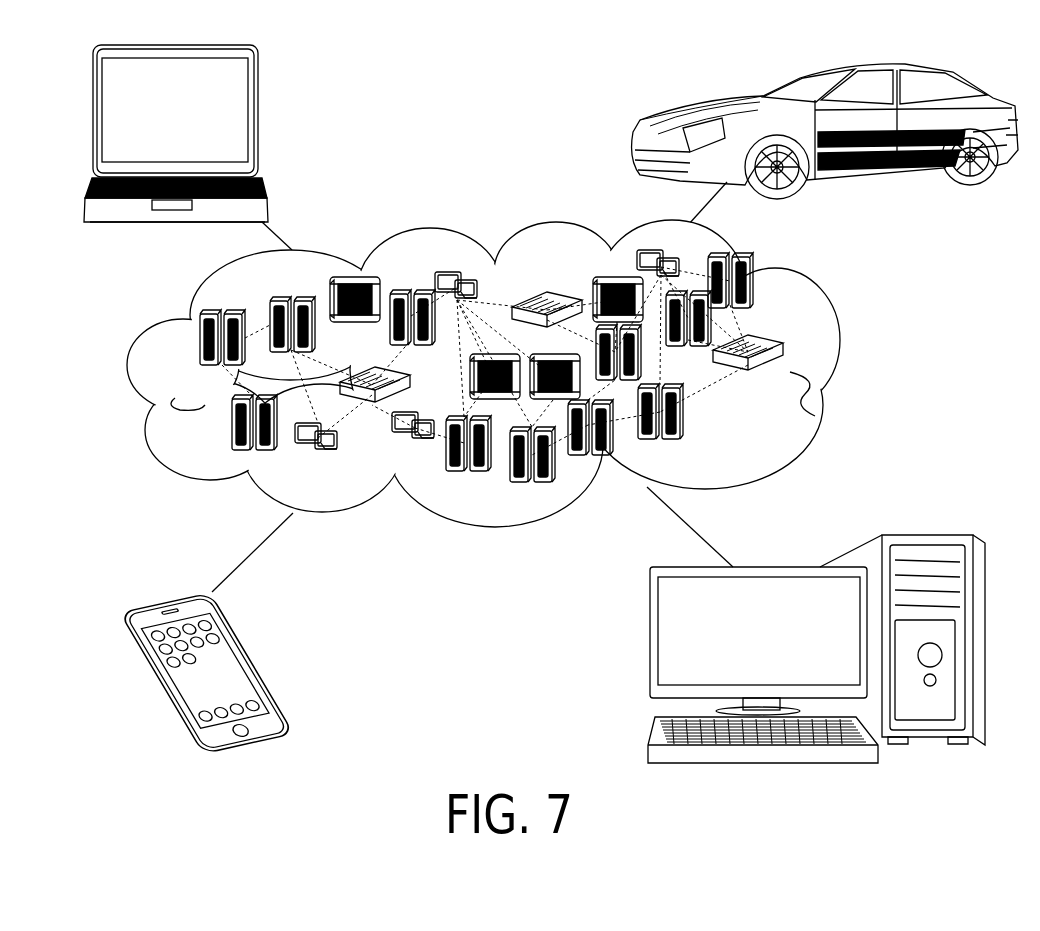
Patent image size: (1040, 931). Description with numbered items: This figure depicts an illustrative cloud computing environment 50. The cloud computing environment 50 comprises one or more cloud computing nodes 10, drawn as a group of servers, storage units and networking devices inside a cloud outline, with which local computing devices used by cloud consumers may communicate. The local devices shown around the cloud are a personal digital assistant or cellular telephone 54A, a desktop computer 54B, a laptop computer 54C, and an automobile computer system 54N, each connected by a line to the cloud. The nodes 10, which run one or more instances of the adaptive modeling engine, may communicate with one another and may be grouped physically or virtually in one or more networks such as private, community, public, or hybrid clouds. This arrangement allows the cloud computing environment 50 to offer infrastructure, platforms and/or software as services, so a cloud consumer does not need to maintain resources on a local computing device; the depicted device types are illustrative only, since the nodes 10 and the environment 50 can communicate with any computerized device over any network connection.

The cloud computing node 10 is at (790, 372).
The cloud computing environment 50 is at (514, 373).
The personal digital assistant or cellular telephone 54A is at (232, 664).
The desktop computer 54B is at (820, 567).
The laptop computer 54C is at (268, 131).
The automobile computer system 54N is at (636, 136).